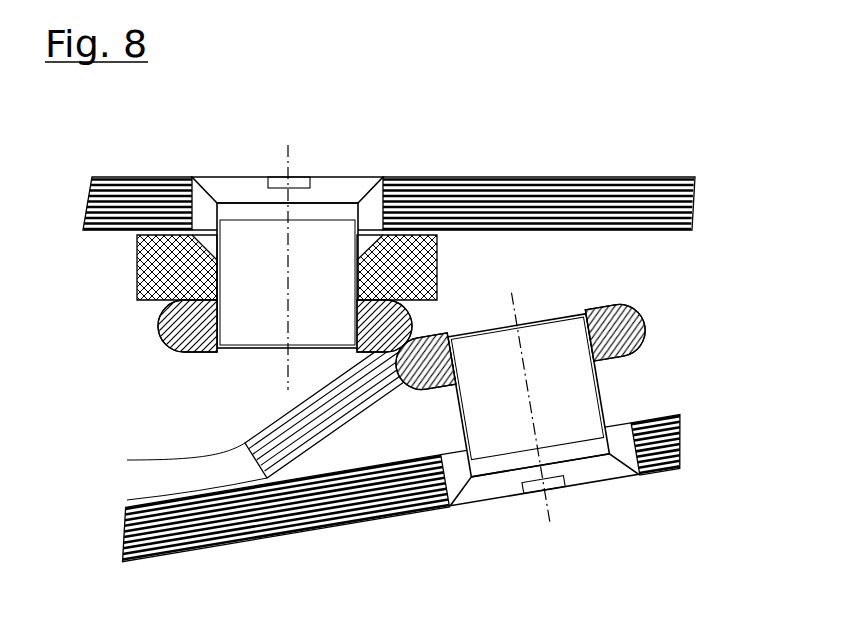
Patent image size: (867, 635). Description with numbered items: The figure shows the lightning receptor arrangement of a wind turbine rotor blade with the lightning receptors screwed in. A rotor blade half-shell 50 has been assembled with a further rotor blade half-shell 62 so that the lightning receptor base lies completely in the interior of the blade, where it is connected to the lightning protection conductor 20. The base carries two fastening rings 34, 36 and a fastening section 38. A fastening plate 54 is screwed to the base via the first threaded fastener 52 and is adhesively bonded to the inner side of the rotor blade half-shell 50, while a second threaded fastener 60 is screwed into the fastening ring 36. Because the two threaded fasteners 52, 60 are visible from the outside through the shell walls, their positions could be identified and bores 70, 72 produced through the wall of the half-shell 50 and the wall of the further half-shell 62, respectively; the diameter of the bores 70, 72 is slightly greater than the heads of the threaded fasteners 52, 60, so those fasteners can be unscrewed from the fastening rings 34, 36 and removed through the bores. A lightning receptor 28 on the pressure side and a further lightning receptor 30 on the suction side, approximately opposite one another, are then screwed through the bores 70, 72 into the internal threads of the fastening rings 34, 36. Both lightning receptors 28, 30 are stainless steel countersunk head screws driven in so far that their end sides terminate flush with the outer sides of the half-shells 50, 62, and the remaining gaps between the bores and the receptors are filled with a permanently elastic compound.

The lightning protection conductor 20 is at (140, 478).
The lightning receptor 28 is at (261, 246).
The further lightning receptor 30 is at (582, 446).
The fastening ring 34 is at (172, 331).
The fastening ring 36 is at (627, 322).
The fastening section 38 is at (305, 428).
The rotor blade half-shell 50 is at (520, 185).
The first threaded fastener 52 is at (252, 322).
The fastening plate 54 is at (150, 272).
The second threaded fastener 60 is at (568, 390).
The further rotor blade half-shell 62 is at (217, 543).
The bore 70 is at (193, 217).
The bore 72 is at (623, 447).